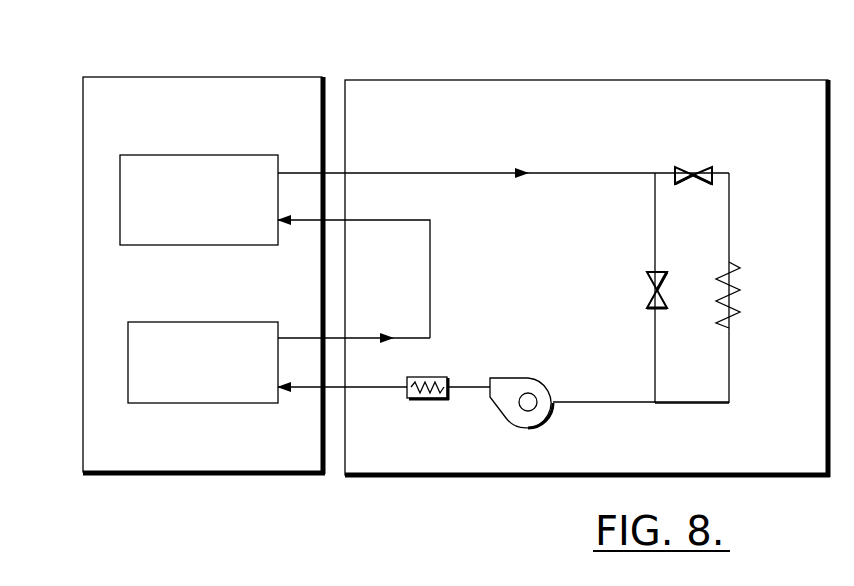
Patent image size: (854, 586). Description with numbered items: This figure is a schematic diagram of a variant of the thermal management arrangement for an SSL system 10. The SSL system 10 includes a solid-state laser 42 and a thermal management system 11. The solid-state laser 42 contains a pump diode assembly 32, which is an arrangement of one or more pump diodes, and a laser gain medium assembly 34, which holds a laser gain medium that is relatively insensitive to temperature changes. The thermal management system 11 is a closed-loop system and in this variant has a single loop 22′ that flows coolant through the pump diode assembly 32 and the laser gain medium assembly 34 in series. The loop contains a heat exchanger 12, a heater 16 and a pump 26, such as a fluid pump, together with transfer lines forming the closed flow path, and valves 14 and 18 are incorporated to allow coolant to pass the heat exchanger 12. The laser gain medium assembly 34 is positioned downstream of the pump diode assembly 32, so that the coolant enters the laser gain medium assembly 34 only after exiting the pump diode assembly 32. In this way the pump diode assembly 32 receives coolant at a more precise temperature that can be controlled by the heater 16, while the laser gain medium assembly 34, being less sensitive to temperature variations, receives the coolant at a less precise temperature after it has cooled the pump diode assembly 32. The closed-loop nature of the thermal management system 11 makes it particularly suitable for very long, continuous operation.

The SSL system 10 is at (440, 33).
The thermal management system 11 is at (587, 257).
The heat exchanger 12 is at (759, 295).
The valve 14 is at (677, 275).
The heater 16 is at (408, 409).
The valve 18 is at (670, 157).
The single loop 22′ is at (503, 149).
The pump 26 is at (513, 421).
The pump diode assembly 32 is at (219, 415).
The laser gain medium assembly 34 is at (201, 147).
The solid-state laser 42 is at (173, 275).